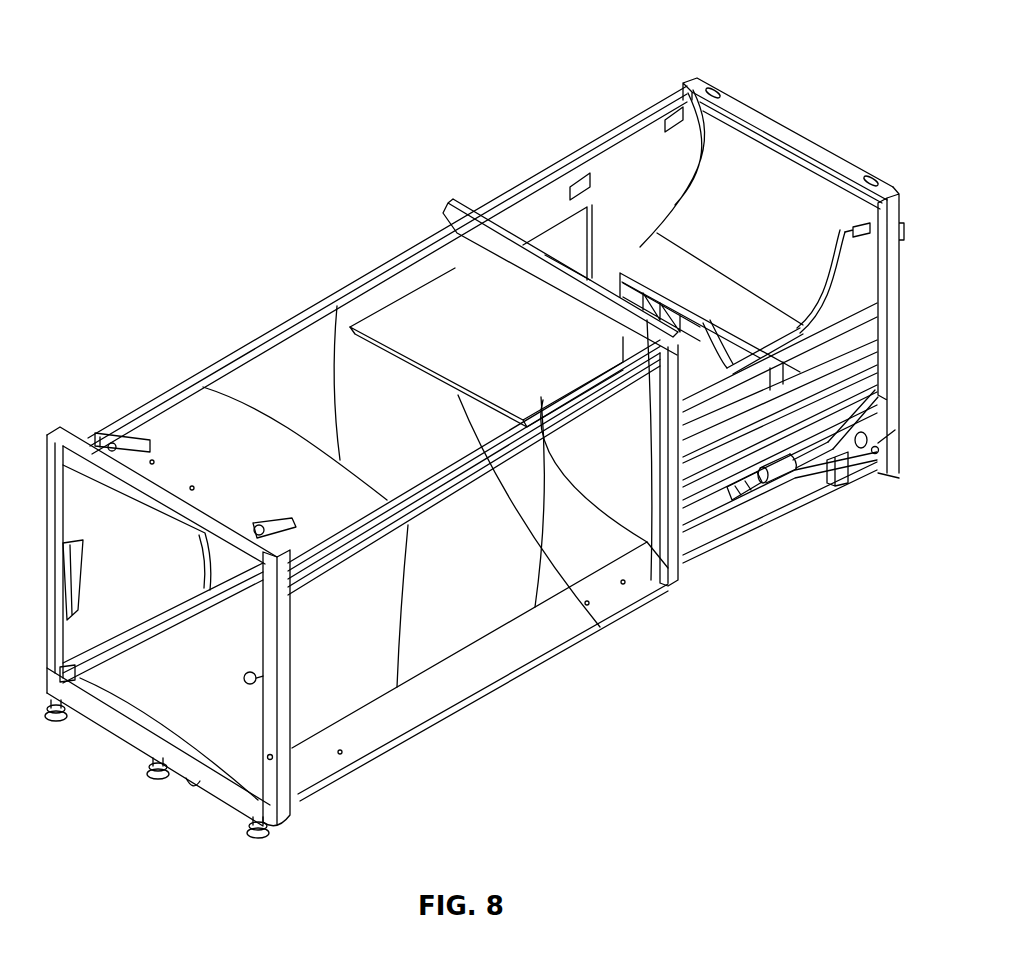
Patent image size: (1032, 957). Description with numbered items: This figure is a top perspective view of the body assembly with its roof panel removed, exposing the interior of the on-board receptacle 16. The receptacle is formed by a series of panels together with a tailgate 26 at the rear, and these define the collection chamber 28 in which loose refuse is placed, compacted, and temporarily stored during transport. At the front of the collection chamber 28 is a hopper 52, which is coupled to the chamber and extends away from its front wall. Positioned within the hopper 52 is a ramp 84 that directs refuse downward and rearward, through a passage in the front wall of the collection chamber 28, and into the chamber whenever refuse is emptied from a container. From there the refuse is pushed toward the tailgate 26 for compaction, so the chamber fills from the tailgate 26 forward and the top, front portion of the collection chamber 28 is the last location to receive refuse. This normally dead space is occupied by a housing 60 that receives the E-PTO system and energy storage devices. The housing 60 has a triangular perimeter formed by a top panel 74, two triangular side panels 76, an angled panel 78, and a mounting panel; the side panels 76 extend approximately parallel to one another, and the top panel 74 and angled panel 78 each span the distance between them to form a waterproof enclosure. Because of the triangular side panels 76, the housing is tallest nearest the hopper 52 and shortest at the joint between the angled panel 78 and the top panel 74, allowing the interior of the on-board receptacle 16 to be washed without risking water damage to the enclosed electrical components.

The on-board receptacle 16 is at (488, 108).
The tailgate 26 is at (257, 798).
The collection chamber 28 is at (330, 380).
The hopper 52 is at (640, 155).
The housing 60 is at (420, 310).
The top panel 74 is at (467, 280).
The side panels 76 is at (651, 580).
The angled panel 78 is at (600, 627).
The ramp 84 is at (783, 197).